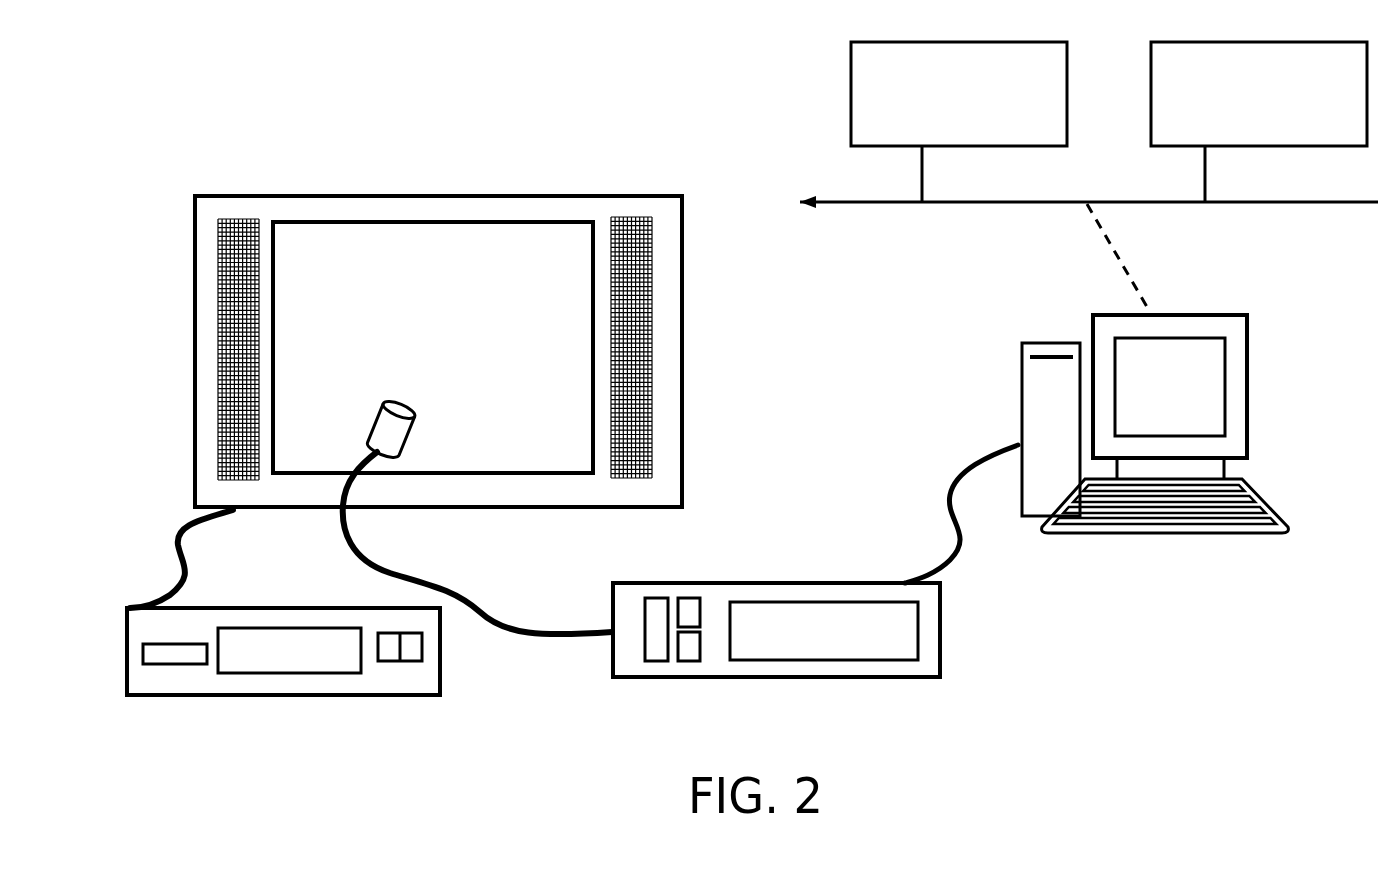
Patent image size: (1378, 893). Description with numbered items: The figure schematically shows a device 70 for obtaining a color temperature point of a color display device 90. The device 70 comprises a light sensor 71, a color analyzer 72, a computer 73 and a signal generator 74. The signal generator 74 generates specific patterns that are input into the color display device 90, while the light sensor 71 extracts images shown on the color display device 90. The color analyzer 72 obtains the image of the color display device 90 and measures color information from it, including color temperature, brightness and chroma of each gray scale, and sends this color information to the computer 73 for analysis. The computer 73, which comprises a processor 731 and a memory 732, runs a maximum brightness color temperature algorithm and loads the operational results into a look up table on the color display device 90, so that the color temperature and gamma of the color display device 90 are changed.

The device for obtaining a color temperature point 70 is at (996, 669).
The light sensor 71 is at (407, 447).
The color analyzer 72 is at (776, 630).
The computer 73 is at (1155, 368).
The signal generator 74 is at (283, 651).
The color display device 90 is at (438, 351).
The processor 731 is at (959, 122).
The memory 732 is at (1259, 122).